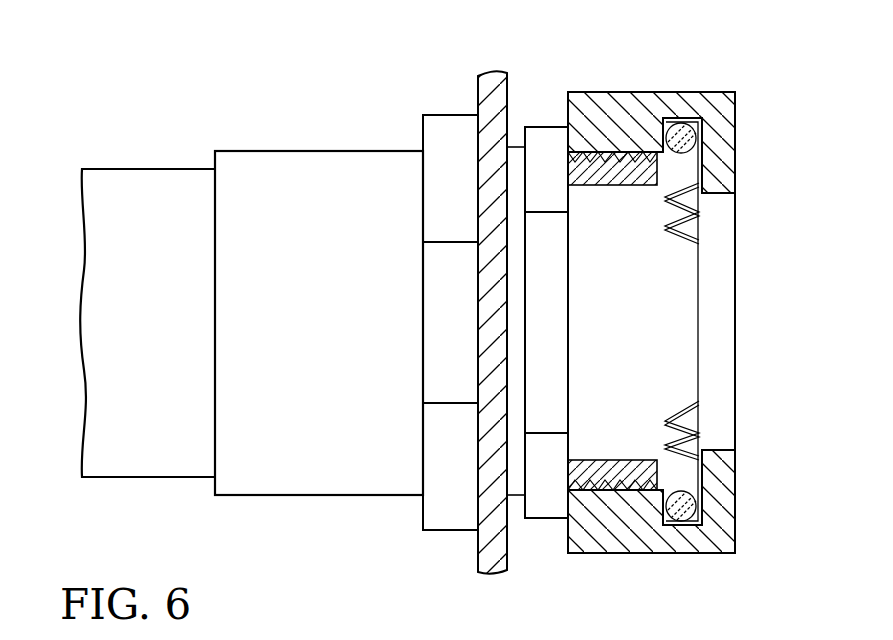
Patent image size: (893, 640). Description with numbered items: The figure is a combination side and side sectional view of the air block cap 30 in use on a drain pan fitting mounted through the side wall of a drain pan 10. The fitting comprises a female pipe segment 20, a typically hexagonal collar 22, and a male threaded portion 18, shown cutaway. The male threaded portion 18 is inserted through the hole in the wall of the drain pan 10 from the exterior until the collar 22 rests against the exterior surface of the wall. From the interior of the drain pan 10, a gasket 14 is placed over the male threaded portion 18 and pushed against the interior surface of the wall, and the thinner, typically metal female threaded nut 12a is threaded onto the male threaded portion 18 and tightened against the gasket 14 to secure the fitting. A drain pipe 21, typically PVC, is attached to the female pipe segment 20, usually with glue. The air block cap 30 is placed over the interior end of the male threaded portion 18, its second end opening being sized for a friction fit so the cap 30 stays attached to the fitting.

The drain pan 10 is at (485, 97).
The female threaded nut 12a is at (552, 512).
The gasket 14 is at (515, 145).
The male threaded portion 18 is at (632, 165).
The female pipe segment 20 is at (335, 160).
The drain pipe 21 is at (167, 183).
The collar 22 is at (425, 137).
The air block cap 30 is at (733, 128).